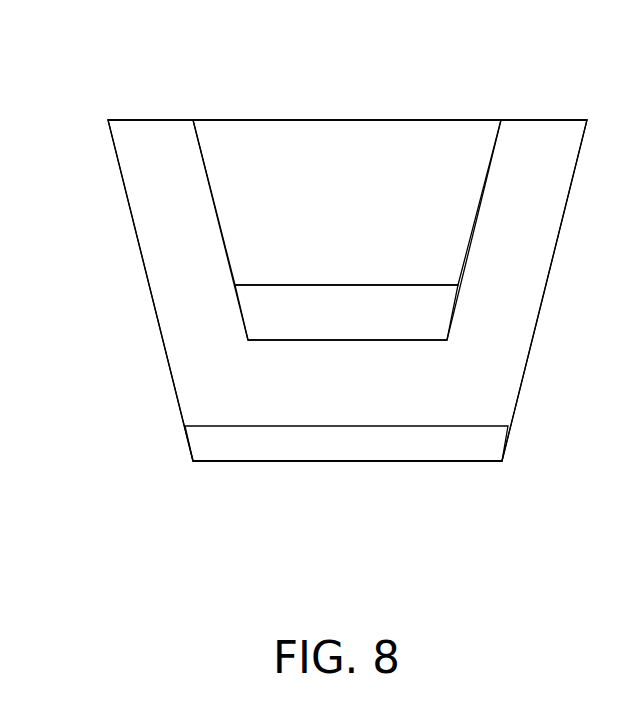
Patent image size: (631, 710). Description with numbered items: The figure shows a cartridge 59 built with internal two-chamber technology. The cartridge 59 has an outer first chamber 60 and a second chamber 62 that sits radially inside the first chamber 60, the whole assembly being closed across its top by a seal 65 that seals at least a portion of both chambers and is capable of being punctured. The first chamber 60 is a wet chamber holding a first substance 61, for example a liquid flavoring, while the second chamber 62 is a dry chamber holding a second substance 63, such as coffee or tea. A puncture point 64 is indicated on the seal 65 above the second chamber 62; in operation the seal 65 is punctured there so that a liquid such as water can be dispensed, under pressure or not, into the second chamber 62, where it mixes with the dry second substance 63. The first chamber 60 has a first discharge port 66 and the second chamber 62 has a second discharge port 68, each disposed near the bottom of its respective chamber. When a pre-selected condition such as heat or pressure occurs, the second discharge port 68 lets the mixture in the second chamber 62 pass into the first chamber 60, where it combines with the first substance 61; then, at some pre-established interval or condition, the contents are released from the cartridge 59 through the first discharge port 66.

The cartridge 59 is at (96, 92).
The first chamber 60 is at (214, 306).
The first substance 61 is at (410, 285).
The second chamber 62 is at (288, 215).
The second substance 63 is at (455, 426).
The puncture point 64 is at (347, 108).
The seal 65 is at (537, 120).
The first discharge port 66 is at (233, 461).
The second discharge port 68 is at (286, 340).